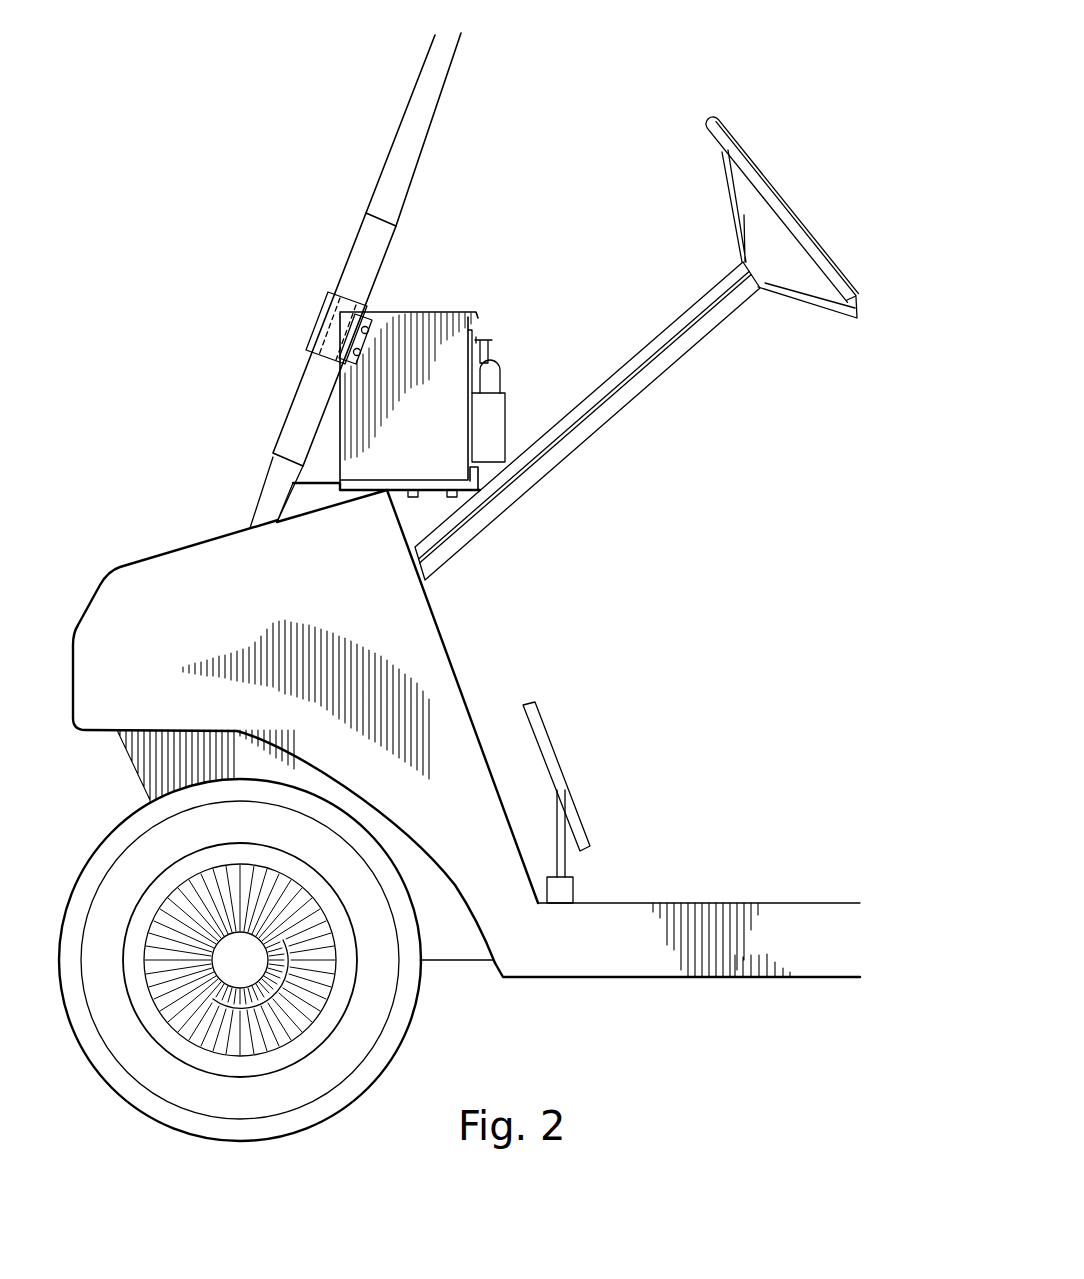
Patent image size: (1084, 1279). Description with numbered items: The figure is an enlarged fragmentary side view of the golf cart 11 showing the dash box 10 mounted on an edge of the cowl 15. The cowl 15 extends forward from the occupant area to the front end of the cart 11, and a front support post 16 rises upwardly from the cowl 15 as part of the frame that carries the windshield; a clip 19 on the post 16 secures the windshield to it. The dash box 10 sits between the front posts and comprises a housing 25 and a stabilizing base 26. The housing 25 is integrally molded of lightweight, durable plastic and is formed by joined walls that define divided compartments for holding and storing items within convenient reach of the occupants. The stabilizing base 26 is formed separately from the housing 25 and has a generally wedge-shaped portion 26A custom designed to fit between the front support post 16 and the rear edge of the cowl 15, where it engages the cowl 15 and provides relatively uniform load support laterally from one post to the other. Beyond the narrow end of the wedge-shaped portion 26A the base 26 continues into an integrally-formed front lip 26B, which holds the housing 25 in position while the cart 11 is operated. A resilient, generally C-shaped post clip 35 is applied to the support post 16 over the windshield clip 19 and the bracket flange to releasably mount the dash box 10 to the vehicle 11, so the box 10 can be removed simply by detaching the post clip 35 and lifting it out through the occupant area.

The dash box 10 is at (526, 266).
The golf cart 11 is at (102, 530).
The cowl 15 is at (185, 573).
The front support post 16 is at (381, 175).
The clip 19 is at (358, 253).
The housing 25 is at (456, 354).
The stabilizing base 26 is at (416, 528).
The wedge-shaped portion 26A is at (302, 503).
The front lip 26B is at (478, 480).
The post clip 35 is at (315, 319).